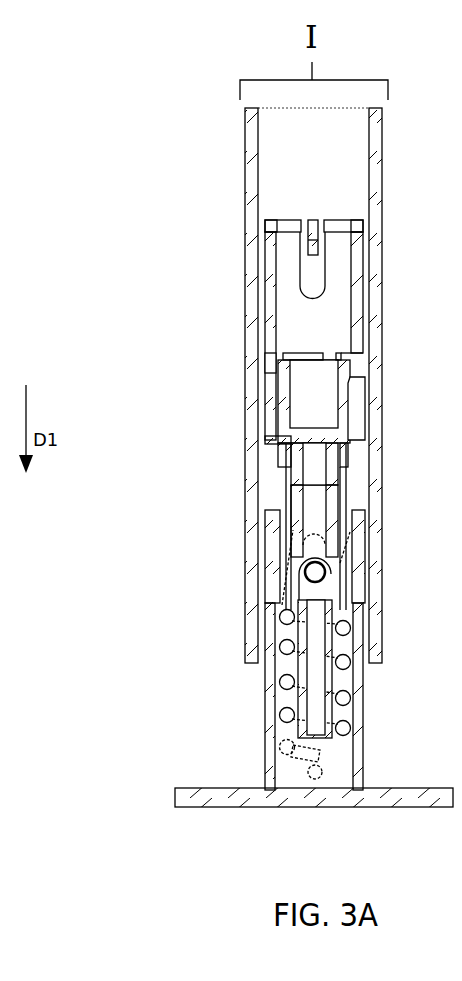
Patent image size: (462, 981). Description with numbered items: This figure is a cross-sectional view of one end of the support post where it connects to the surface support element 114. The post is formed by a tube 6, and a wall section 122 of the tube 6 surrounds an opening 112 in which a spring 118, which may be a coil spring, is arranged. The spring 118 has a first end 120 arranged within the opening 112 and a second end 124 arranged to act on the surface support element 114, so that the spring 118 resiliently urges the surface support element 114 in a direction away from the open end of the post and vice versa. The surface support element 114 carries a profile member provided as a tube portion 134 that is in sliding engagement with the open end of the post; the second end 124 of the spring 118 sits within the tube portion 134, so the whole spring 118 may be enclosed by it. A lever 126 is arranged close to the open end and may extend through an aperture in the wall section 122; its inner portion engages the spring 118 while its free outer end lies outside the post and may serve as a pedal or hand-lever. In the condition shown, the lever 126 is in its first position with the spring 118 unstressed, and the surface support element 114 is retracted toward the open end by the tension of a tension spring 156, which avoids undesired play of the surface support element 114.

The tube 6 is at (247, 268).
The wall section 122 is at (153, 406).
The lever 126 is at (461, 172).
The first end 120 is at (271, 625).
The tube portion 134 is at (262, 748).
The spring 118 is at (356, 725).
The tension spring 156 is at (327, 622).
The opening 112 is at (262, 677).
The second end 124 is at (340, 771).
The surface support element 114 is at (175, 795).